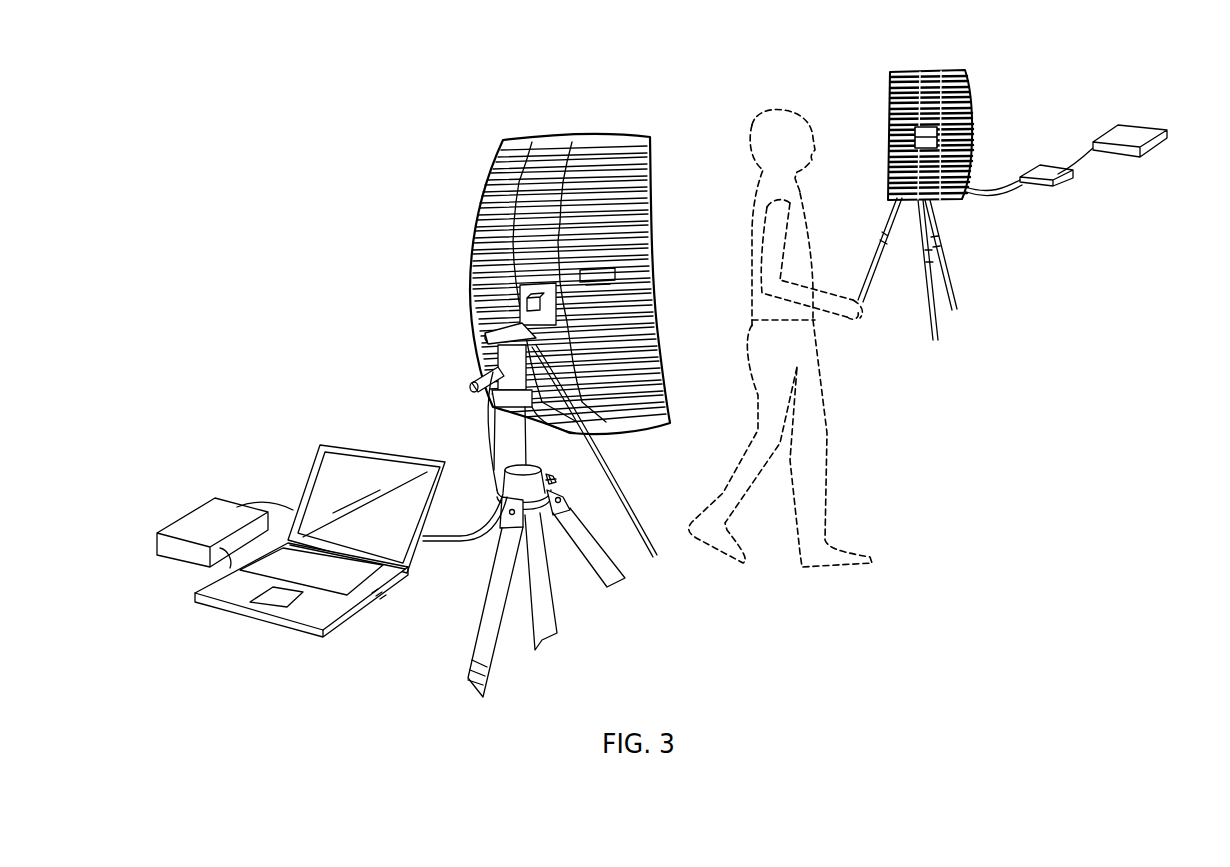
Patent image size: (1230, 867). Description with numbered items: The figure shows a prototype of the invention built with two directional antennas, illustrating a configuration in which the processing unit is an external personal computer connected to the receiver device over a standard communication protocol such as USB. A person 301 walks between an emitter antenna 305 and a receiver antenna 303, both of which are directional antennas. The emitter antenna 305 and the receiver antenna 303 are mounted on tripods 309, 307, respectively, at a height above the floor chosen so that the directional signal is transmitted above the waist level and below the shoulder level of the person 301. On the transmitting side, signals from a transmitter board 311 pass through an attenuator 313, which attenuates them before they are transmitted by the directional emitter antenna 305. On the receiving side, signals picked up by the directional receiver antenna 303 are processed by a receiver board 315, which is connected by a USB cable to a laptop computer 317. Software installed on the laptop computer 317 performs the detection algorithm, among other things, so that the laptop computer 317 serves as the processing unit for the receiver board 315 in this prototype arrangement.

The person 301 is at (752, 125).
The receiver antenna 303 is at (560, 150).
The emitter antenna 305 is at (960, 78).
The tripod 307 is at (540, 573).
The tripod 309 is at (953, 283).
The transmitter board 311 is at (1133, 135).
The attenuator 313 is at (1057, 182).
The receiver board 315 is at (200, 527).
The laptop computer 317 is at (312, 603).